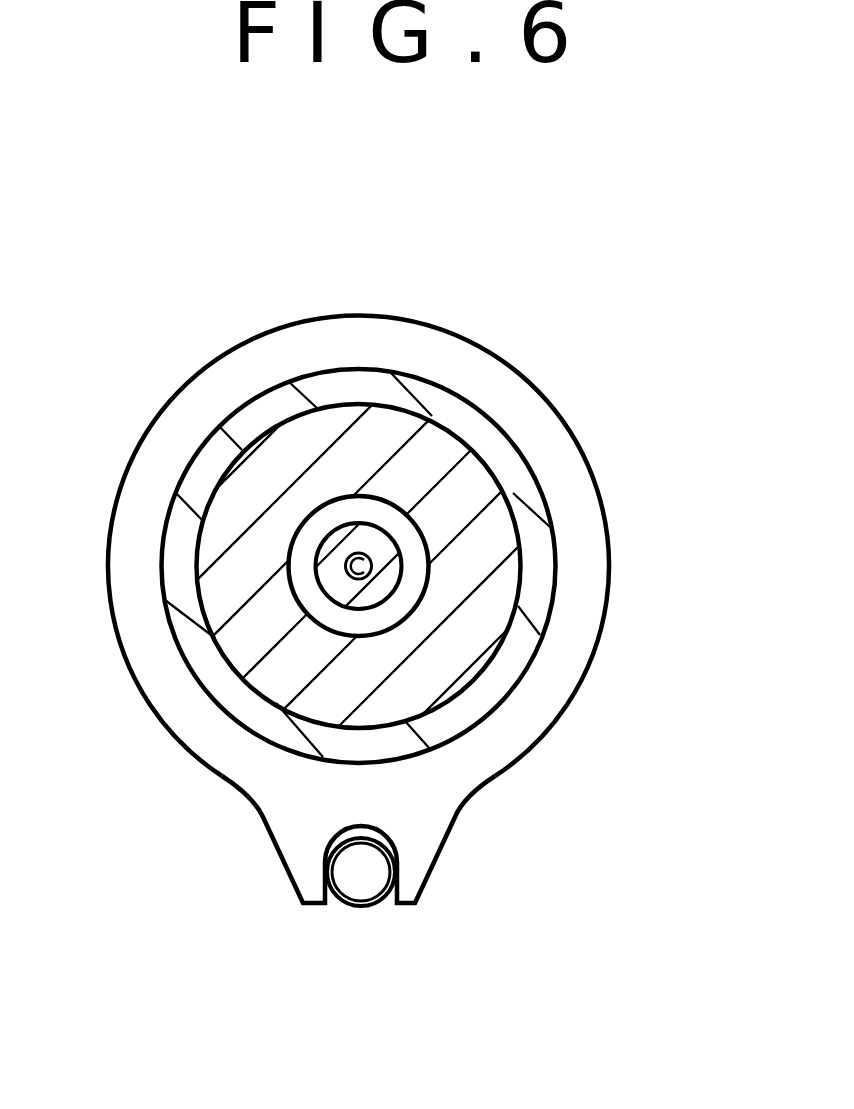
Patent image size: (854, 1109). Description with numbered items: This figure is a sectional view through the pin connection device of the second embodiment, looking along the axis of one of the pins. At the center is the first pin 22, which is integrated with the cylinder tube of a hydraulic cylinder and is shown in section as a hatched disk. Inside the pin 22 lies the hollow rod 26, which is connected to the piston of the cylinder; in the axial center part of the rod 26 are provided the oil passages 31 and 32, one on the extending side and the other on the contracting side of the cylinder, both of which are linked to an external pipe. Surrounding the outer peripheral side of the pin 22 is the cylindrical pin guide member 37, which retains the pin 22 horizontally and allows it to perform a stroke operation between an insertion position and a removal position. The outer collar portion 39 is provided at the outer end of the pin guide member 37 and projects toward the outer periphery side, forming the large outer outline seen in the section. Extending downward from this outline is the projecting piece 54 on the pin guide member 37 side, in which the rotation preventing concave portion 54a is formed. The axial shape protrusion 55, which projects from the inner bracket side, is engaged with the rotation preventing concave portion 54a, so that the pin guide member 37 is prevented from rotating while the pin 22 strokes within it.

The first pin 22 is at (430, 668).
The hollow rod 26 is at (372, 496).
The oil passage 31 is at (372, 566).
The oil passage 32 is at (340, 572).
The pin guide member 37 is at (193, 457).
The outer collar portion 39 is at (547, 398).
The projecting piece 54 is at (283, 857).
The rotation preventing concave portion 54a is at (340, 882).
The axial shape protrusion 55 is at (363, 907).